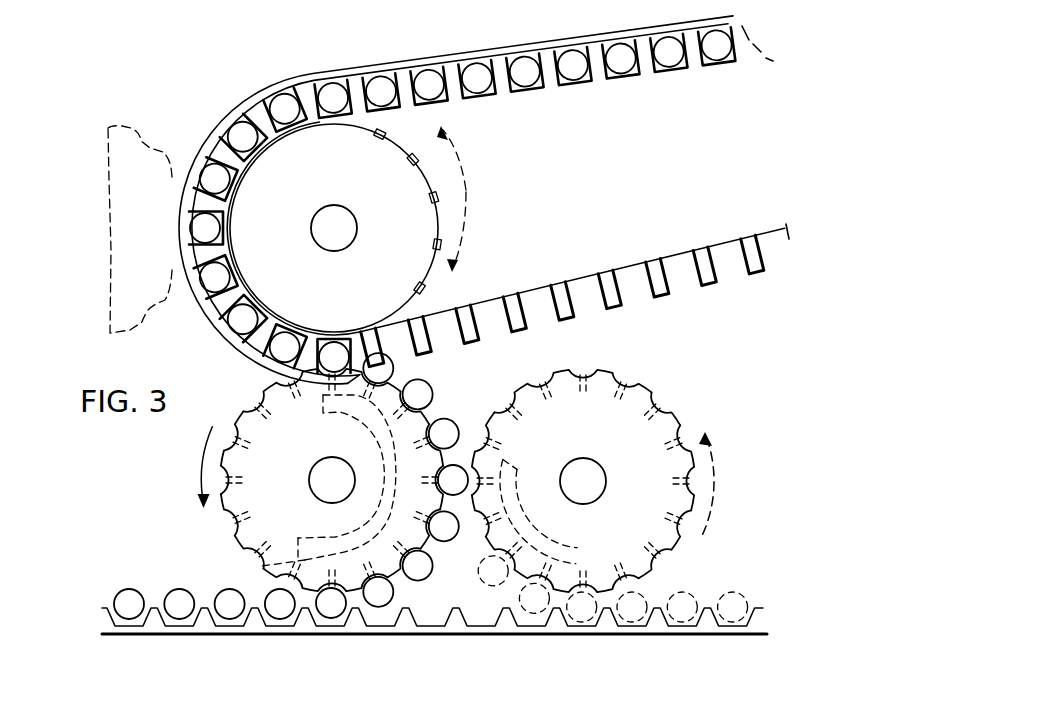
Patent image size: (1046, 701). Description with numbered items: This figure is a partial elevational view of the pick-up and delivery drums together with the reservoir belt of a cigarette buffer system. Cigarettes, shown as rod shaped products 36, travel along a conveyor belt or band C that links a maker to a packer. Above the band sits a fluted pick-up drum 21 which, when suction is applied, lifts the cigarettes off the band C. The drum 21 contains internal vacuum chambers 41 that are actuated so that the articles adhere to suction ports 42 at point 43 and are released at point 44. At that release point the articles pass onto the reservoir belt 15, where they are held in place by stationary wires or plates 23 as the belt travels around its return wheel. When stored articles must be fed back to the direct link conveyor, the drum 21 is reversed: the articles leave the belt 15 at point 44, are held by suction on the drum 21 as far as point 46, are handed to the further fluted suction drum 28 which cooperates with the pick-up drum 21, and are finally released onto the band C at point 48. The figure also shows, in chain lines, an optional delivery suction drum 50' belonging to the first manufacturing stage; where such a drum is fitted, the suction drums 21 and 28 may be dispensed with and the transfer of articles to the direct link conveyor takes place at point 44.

The reservoir belt 15 is at (612, 270).
The fluted pick-up drum 21 is at (277, 490).
The stationary wires or plates 23 is at (313, 73).
The fluted drum 28 is at (618, 422).
The rod shaped products 36 is at (128, 598).
The internal vacuum chambers 41 is at (360, 441).
The suction ports 42 is at (262, 567).
The pick-up point 43 is at (330, 612).
The release point 44 is at (334, 342).
The transfer point 46 is at (460, 478).
The release point 48 is at (582, 620).
The delivery suction drum 50' is at (151, 208).
The conveyor belt or band C is at (505, 627).